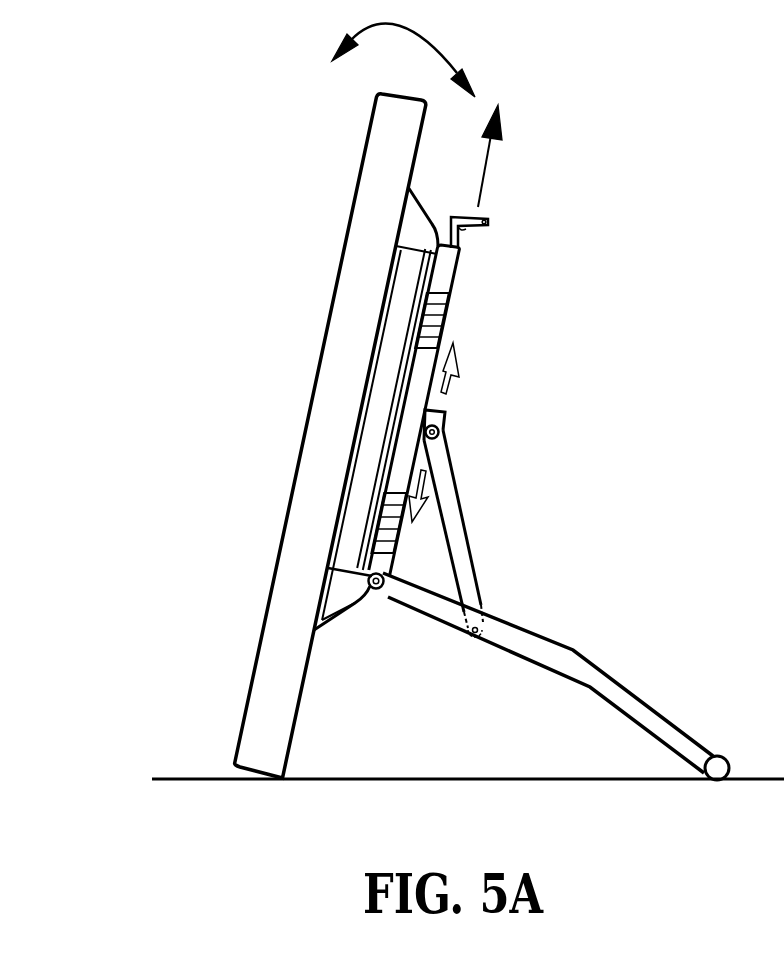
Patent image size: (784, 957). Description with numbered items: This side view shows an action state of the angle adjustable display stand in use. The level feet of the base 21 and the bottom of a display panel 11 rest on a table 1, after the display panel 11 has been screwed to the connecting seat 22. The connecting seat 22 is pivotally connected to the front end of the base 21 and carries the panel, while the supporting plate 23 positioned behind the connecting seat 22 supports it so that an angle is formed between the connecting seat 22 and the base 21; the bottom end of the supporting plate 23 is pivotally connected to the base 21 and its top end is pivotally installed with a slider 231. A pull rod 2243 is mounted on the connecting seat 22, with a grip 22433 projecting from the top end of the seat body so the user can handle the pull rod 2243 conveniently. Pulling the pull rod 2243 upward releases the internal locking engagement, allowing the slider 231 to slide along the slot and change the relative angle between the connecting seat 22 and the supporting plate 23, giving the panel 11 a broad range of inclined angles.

The table 1 is at (215, 797).
The display panel 11 is at (374, 164).
The base 21 is at (550, 650).
The connecting seat 22 is at (443, 283).
The pull rod 2243 is at (457, 238).
The grip 22433 is at (490, 223).
The supporting plate 23 is at (447, 497).
The slider 231 is at (440, 418).